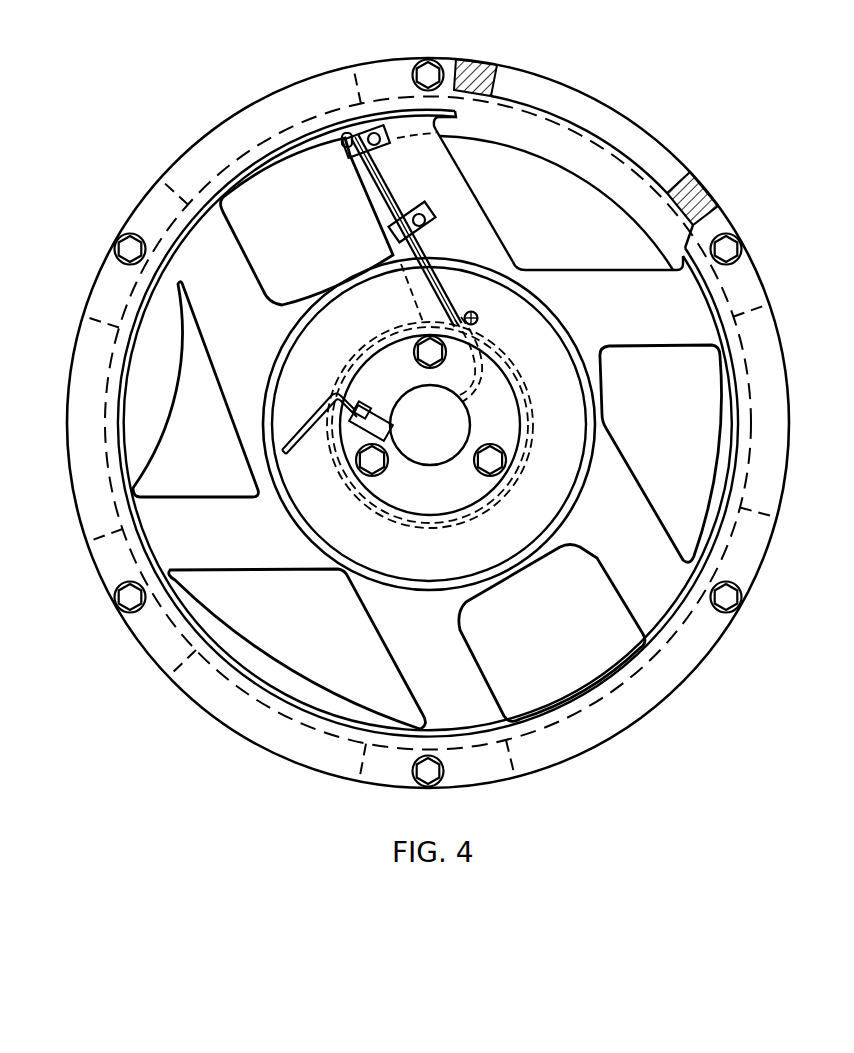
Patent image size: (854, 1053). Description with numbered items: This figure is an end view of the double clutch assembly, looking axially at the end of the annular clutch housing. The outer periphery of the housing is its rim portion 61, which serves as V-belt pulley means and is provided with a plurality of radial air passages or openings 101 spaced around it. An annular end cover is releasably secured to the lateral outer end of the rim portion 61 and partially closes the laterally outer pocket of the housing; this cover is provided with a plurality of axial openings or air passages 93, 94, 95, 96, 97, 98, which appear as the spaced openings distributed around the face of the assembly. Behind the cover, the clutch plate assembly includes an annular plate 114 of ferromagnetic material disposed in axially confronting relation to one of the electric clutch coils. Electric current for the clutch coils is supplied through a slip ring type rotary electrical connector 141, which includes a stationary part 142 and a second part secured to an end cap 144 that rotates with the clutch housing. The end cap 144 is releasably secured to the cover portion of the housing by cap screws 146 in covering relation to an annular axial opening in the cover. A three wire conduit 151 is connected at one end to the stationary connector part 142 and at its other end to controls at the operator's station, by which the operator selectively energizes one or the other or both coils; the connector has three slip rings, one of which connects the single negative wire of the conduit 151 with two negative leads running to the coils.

The rim portion 61 is at (700, 200).
The axial opening or air passage 93 is at (505, 232).
The axial opening or air passage 94 is at (653, 363).
The axial opening or air passage 95 is at (577, 578).
The axial opening or air passage 96 is at (325, 626).
The axial opening or air passage 97 is at (208, 470).
The axial opening or air passage 98 is at (277, 265).
The radial air passages or openings 101 is at (174, 188).
The annular plate 114 is at (302, 700).
The slip ring type rotary electrical connector 141 is at (407, 473).
The stationary part 142 is at (452, 422).
The end cap 144 is at (468, 488).
The cap screws 146 is at (427, 357).
The three wire conduit 151 is at (315, 408).